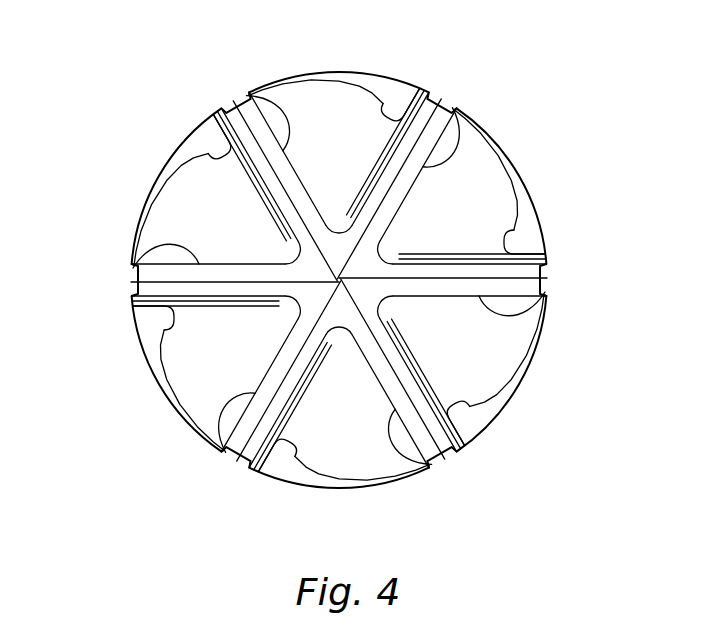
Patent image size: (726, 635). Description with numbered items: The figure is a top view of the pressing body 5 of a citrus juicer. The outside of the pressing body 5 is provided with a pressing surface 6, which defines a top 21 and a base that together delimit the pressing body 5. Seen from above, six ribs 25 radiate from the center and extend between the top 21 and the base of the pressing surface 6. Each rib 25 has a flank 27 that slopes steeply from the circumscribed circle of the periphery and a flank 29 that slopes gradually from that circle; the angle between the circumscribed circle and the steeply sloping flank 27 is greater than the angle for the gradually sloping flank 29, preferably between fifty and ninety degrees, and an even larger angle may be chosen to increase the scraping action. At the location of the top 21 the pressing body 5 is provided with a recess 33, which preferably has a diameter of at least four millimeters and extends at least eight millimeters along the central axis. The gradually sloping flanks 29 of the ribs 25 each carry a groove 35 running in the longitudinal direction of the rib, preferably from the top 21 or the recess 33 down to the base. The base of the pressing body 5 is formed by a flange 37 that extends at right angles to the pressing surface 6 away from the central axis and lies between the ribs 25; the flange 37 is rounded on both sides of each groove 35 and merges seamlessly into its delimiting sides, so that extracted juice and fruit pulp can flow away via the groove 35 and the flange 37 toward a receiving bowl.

The pressing body 5 is at (95, 112).
The pressing surface 6 is at (503, 343).
The top 21 is at (338, 268).
The ribs 25 is at (180, 210).
The steeply sloping flank 27 is at (220, 124).
The gradually sloping flank 29 is at (355, 444).
The recess 33 is at (337, 285).
The groove 35 is at (275, 140).
The flange 37 is at (145, 341).